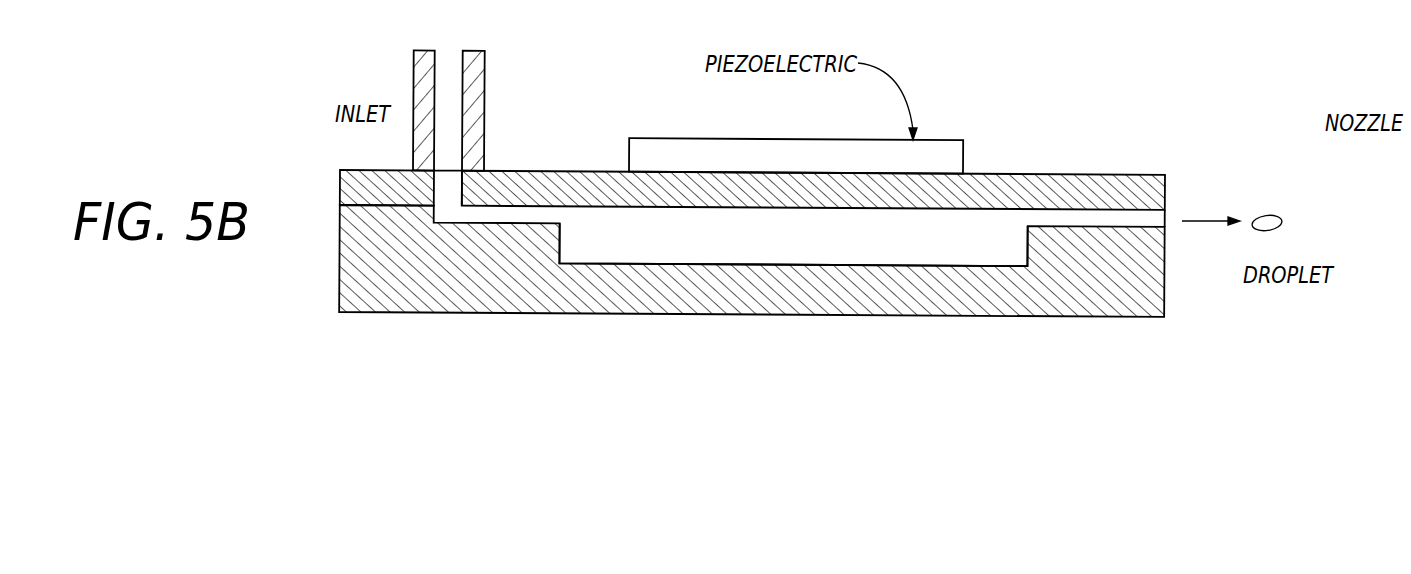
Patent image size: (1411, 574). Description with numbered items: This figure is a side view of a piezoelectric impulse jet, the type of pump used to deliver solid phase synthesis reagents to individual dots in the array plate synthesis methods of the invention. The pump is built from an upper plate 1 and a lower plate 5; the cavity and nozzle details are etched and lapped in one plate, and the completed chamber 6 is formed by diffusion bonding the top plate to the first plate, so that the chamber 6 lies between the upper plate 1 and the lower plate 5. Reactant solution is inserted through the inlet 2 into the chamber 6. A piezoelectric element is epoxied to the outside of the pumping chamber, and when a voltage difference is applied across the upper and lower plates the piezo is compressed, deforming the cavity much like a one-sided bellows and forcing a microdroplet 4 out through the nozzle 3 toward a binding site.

The upper plate 1 is at (978, 188).
The inlet 2 is at (472, 60).
The nozzle 3 is at (1172, 203).
The microdroplet 4 is at (1280, 217).
The lower plate 5 is at (713, 290).
The chamber 6 is at (970, 240).